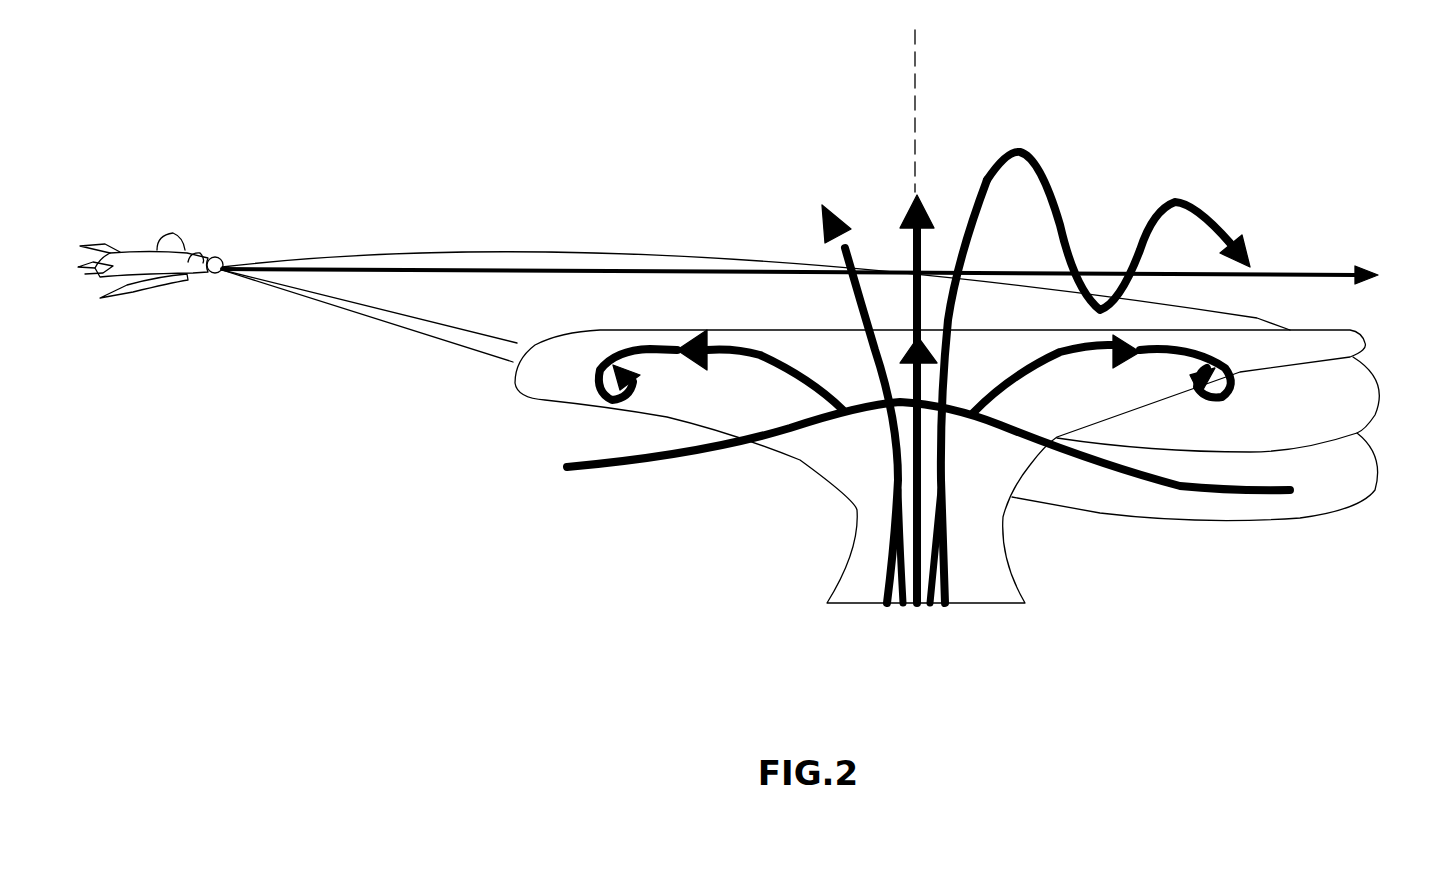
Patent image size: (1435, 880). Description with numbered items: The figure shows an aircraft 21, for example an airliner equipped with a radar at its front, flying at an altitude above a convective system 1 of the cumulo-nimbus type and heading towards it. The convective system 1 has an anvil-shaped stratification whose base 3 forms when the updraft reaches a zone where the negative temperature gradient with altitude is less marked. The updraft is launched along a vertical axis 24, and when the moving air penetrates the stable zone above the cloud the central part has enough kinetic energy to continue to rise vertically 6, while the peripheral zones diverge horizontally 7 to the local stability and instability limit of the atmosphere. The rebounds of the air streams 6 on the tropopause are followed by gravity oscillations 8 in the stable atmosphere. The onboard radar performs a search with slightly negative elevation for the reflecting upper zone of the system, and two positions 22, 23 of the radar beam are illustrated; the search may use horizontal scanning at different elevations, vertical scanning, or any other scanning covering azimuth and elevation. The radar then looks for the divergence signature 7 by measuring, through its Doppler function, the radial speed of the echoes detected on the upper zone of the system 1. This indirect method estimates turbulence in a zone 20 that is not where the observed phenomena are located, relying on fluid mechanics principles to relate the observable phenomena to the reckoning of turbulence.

The convective system 1 is at (1365, 347).
The base 3 is at (1213, 492).
The vertical rise 6 is at (857, 270).
The horizontal divergence 7 is at (590, 373).
The gravity oscillations 8 is at (1035, 153).
The zone 20 is at (705, 133).
The aircraft 21 is at (133, 293).
The radar beam position 22 is at (1257, 318).
The radar beam position 23 is at (1313, 517).
The vertical axis 24 is at (915, 62).